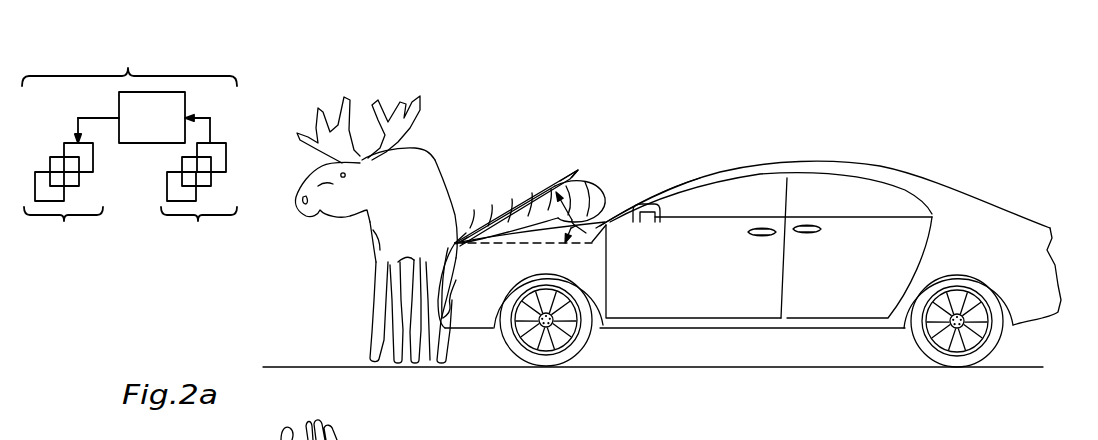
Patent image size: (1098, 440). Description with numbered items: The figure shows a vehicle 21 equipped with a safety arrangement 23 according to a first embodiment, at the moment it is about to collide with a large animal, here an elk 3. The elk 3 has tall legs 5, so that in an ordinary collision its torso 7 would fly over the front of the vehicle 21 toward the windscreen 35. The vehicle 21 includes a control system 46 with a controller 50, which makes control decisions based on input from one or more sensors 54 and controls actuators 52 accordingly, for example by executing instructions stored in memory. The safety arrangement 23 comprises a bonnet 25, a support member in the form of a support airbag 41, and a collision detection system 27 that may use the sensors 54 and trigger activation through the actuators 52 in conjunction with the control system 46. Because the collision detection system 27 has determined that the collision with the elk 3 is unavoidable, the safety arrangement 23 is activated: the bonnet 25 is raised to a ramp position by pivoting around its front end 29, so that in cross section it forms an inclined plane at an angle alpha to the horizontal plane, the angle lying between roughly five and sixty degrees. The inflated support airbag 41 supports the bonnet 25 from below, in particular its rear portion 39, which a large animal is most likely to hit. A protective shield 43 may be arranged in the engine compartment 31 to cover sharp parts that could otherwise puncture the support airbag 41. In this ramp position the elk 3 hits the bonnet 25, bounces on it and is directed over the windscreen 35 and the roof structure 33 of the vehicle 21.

The elk 3 is at (291, 155).
The legs 5 is at (362, 313).
The torso 7 is at (378, 232).
The vehicle 21 is at (963, 159).
The safety arrangement 23 is at (535, 170).
The bonnet 25 is at (520, 204).
The collision detection system 27 is at (448, 312).
The front end 29 is at (463, 224).
The engine compartment 31 is at (535, 241).
The roof structure 33 is at (752, 162).
The windscreen 35 is at (683, 179).
The rear portion 39 is at (592, 157).
The support airbag 41 is at (590, 198).
The protective shield 43 is at (513, 230).
The control system 46 is at (129, 55).
The controller 50 is at (142, 117).
The actuators 52 is at (75, 205).
The sensors 54 is at (197, 205).